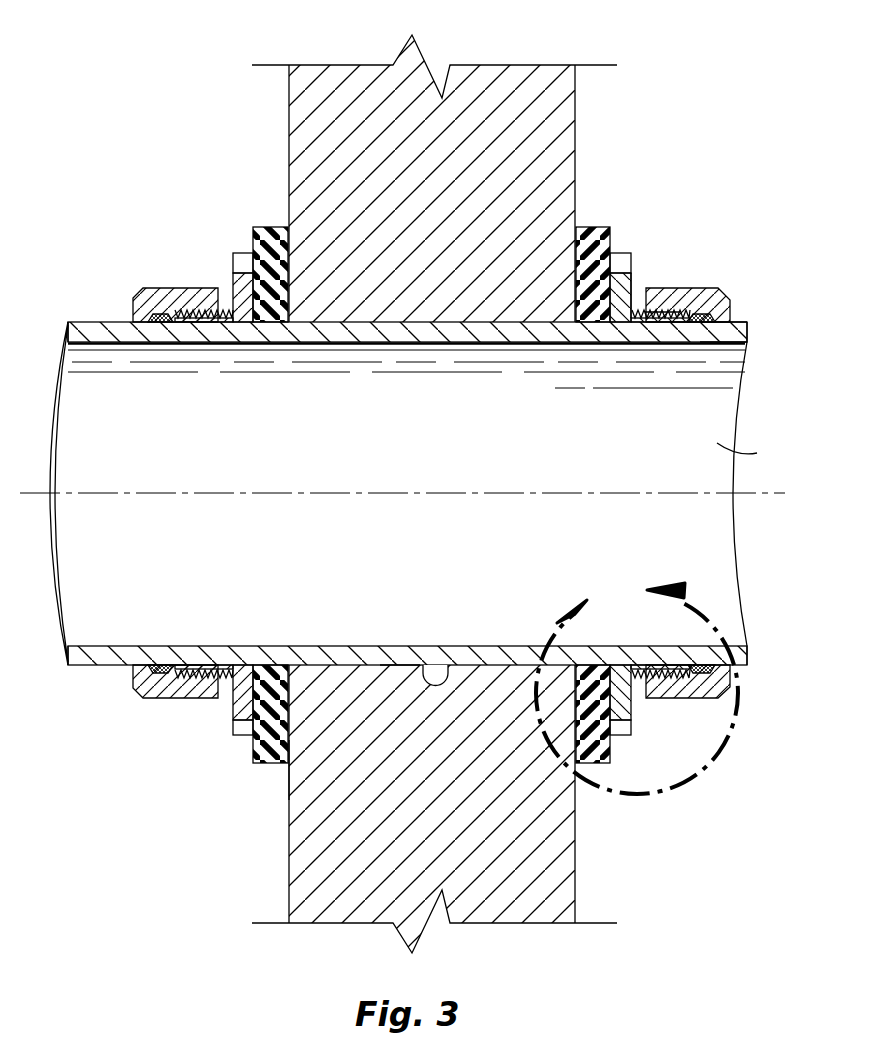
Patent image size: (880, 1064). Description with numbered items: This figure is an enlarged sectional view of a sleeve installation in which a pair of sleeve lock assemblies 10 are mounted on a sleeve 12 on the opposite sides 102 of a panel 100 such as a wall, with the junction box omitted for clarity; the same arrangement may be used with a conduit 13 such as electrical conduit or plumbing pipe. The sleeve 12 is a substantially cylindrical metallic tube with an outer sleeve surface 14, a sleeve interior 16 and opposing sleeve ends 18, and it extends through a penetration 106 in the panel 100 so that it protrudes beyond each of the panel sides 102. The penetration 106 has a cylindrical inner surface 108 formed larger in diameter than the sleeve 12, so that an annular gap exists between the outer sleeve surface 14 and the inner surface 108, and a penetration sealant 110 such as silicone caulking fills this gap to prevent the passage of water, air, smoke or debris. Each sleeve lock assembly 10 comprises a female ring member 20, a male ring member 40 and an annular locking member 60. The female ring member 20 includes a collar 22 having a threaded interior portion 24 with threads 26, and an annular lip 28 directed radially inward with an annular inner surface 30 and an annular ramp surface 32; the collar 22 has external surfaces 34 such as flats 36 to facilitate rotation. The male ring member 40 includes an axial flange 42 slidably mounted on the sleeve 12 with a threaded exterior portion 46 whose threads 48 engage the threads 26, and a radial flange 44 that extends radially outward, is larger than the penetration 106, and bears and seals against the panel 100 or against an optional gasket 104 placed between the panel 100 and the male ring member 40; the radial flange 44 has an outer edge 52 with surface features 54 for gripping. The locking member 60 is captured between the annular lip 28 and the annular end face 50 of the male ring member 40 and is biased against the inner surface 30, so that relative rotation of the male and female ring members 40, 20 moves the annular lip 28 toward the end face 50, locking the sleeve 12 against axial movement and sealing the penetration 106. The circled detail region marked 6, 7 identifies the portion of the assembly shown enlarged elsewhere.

The panel 100 is at (527, 65).
The panel sides 102 is at (289, 103).
The sleeve lock assembly 10 is at (438, 421).
The sleeve 12 is at (417, 493).
The conduit 13 is at (736, 531).
The outer sleeve surface 14 is at (740, 325).
The sleeve interior 16 is at (750, 453).
The sleeve ends 18 is at (743, 646).
The female ring member 20 is at (423, 285).
The collar 22 is at (693, 288).
The threaded interior portion 24 is at (461, 748).
The threads 26 is at (461, 748).
The annular lip 28 is at (733, 342).
The annular inner surface 30 is at (678, 688).
The annular ramp surface 32 is at (731, 693).
The external surfaces 34 is at (451, 751).
The flats 36 is at (665, 698).
The male ring member 40 is at (432, 246).
The axial flange 42 is at (636, 311).
The radial flange 44 is at (633, 270).
The threaded exterior portion 46 is at (643, 372).
The threads 48 is at (645, 322).
The annular end face 50 is at (712, 322).
The outer edge 52 is at (627, 221).
The surface features 54 is at (620, 252).
The locking member 60 is at (160, 325).
The gasket 104 is at (578, 763).
The penetration 106 is at (289, 775).
The inner surface 108 is at (445, 676).
The penetration sealant 110 is at (398, 665).
The detail view circle 6 is at (637, 686).
The detail view circle 7 is at (637, 686).